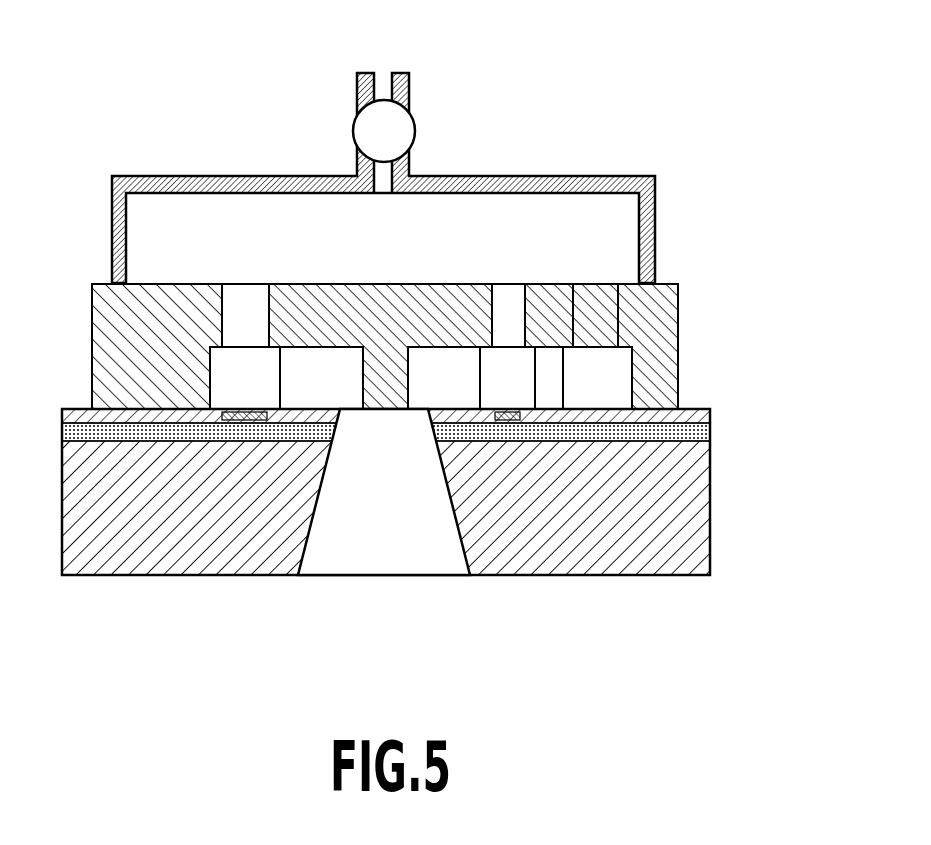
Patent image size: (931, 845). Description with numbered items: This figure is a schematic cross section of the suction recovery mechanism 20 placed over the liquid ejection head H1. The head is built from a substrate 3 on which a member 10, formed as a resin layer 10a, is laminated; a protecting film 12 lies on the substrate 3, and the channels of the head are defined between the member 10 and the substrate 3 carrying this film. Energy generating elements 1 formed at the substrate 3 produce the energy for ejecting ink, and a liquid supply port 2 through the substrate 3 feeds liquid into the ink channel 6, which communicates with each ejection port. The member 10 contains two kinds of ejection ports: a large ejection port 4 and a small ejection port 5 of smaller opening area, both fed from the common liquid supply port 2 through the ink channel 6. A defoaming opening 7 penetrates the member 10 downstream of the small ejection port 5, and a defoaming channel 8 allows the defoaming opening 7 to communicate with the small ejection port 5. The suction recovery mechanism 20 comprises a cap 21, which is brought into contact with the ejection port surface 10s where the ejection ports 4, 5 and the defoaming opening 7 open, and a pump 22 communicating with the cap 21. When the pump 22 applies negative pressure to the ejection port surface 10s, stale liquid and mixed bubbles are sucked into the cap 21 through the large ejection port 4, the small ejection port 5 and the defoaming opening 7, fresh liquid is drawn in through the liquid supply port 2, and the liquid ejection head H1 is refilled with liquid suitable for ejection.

The liquid ejection head H1 is at (669, 84).
The energy generating element 1 is at (255, 420).
The liquid supply port 2 is at (390, 550).
The substrate 3 is at (695, 510).
The large ejection port 4 is at (263, 310).
The small ejection port 5 is at (523, 306).
The ink channel 6 is at (422, 378).
The defoaming opening 7 is at (618, 335).
The defoaming channel 8 is at (618, 392).
The member 10 is at (158, 312).
The ejection port surface 10s is at (302, 286).
The resin layer 10a is at (652, 293).
The protecting film 12 is at (697, 413).
The suction recovery mechanism 20 is at (540, 113).
The cap 21 is at (520, 178).
The pump 22 is at (415, 124).